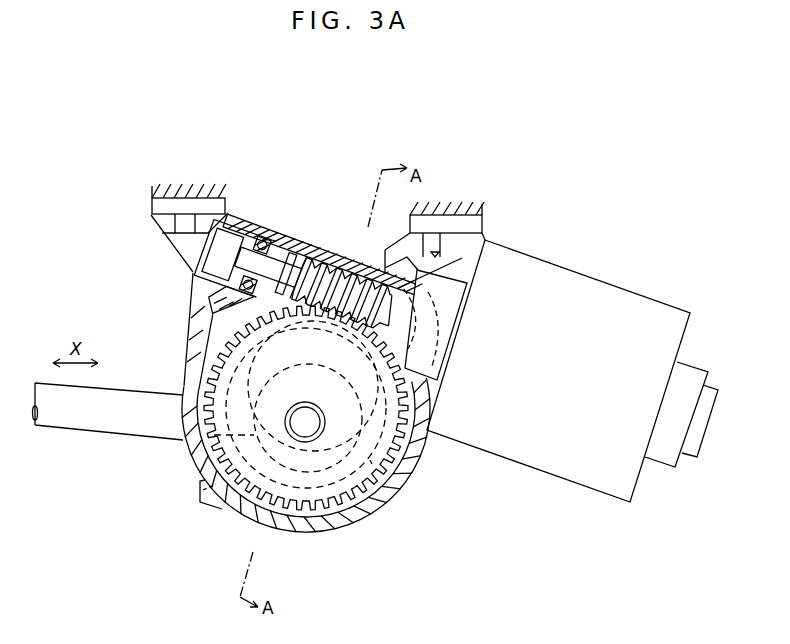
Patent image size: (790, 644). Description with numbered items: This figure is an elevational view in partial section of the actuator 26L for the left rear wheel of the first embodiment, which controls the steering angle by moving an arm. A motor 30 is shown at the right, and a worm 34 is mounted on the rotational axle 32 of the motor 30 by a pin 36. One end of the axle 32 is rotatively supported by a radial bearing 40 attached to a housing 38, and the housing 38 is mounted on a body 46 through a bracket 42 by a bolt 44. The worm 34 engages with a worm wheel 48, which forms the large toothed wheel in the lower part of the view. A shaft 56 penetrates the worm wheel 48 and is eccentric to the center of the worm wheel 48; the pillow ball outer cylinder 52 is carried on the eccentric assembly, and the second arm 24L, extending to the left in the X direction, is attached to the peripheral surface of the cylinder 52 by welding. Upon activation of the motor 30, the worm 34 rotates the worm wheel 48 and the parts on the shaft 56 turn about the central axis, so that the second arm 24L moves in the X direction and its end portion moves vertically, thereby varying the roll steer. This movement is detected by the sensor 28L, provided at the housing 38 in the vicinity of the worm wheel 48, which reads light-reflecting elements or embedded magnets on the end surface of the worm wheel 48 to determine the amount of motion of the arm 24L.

The second arm 24L is at (95, 433).
The actuator 26L is at (522, 174).
The sensor 28L is at (337, 517).
The motor 30 is at (603, 282).
The rotational axle 32 is at (240, 228).
The worm 34 is at (357, 301).
The pin 36 is at (323, 255).
The housing 38 is at (212, 503).
The radial bearing 40 is at (267, 269).
The bracket 42 is at (181, 261).
The bolt 44 is at (163, 230).
The body 46 is at (152, 205).
The worm wheel 48 is at (410, 453).
The pillow ball outer cylinder 52 is at (370, 460).
The shaft 56 is at (323, 430).